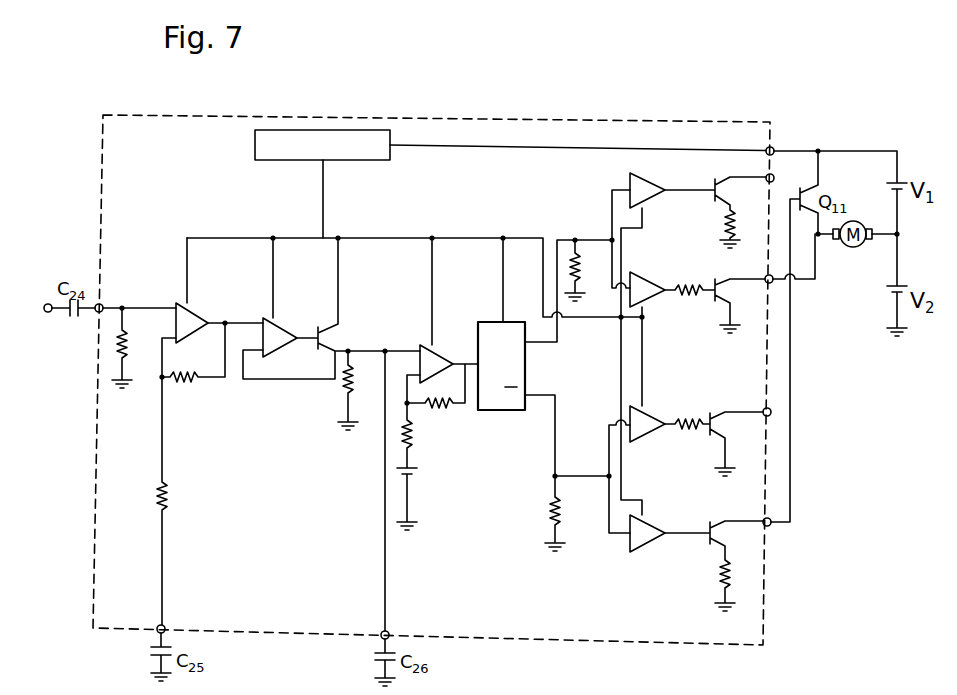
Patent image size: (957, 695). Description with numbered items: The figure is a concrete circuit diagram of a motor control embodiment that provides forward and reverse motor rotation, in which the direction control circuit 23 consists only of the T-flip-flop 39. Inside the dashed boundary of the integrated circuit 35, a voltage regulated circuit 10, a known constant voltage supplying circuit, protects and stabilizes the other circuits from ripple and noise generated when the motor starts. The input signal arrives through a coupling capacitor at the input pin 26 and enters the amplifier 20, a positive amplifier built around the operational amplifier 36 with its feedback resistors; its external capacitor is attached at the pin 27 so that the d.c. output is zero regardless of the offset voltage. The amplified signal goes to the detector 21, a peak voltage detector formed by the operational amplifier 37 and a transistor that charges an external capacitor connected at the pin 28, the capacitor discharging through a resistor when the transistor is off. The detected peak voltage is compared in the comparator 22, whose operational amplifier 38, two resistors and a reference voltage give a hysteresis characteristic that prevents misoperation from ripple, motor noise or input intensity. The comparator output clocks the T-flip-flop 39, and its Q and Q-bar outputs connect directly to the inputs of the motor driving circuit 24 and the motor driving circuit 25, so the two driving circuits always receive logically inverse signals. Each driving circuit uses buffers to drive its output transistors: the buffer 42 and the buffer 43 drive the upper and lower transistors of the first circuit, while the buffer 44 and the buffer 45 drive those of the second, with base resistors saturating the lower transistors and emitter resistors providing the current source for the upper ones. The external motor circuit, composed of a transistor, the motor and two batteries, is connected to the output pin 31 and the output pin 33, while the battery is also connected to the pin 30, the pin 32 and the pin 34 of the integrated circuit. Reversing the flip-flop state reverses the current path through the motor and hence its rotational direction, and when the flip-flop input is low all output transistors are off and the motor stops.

The voltage regulated circuit 10 is at (363, 157).
The amplifier 20 is at (187, 431).
The detector 21 is at (331, 338).
The comparator 22 is at (437, 399).
The direction control circuit 23 is at (546, 394).
The motor driving circuit 24 is at (689, 333).
The motor driving circuit 25 is at (686, 492).
The input terminal 26 is at (102, 304).
The pin for capacitor C25 27 is at (164, 626).
The pin for capacitor C26 28 is at (388, 632).
The pin 30 is at (787, 164).
The output pin 31 is at (766, 276).
The pin 32 is at (764, 407).
The output pin 33 is at (764, 518).
The pin 34 is at (773, 148).
The integrated circuit 35 is at (745, 633).
The operational amplifier 36 is at (194, 318).
The operational amplifier 37 is at (283, 335).
The operational amplifier 38 is at (437, 358).
The T-flip-flop 39 is at (510, 322).
The buffer 42 is at (645, 189).
The buffer 43 is at (648, 297).
The buffer 44 is at (646, 422).
The buffer 45 is at (644, 540).